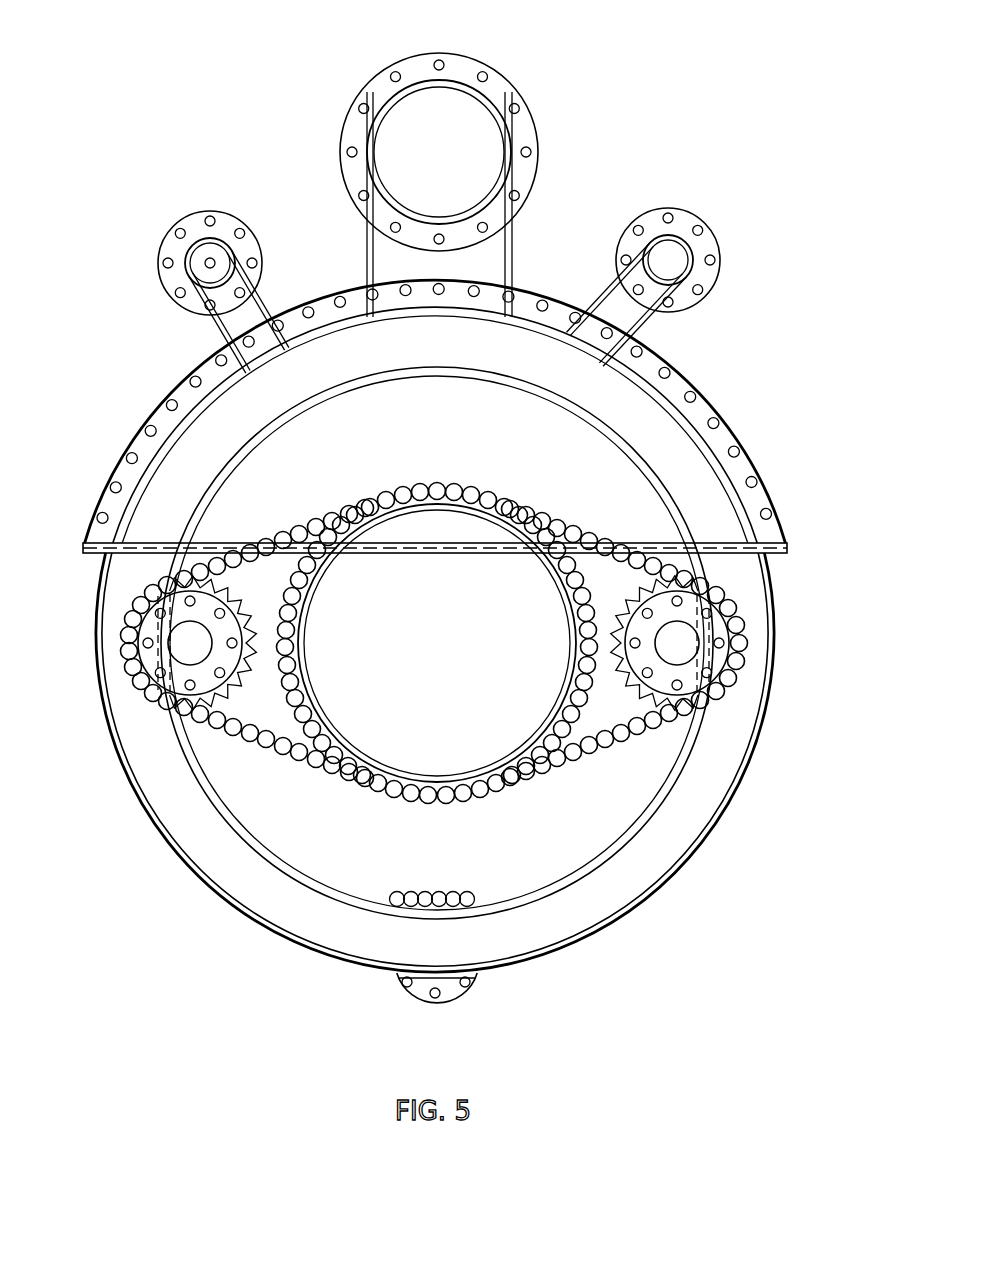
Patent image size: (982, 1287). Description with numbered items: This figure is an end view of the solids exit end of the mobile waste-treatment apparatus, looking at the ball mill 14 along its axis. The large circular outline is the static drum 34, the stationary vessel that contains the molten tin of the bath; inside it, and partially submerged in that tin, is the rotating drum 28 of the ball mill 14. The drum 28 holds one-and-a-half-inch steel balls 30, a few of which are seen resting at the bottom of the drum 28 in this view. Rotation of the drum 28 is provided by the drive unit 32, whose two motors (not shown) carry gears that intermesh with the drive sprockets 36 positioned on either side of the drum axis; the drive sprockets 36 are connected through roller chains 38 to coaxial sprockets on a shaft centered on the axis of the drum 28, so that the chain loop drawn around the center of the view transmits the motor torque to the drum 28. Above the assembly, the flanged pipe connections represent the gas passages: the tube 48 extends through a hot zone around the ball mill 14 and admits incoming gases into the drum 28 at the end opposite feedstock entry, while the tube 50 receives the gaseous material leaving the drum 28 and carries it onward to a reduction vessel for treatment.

The ball mill 14 is at (611, 492).
The drum 28 is at (566, 877).
The steel balls 30 is at (390, 888).
The drive unit 32 is at (762, 608).
The static drum 34 is at (722, 829).
The drive sprockets 36 is at (122, 611).
The roller chains 38 is at (262, 748).
The tube 48 is at (203, 241).
The tube 50 is at (487, 93).